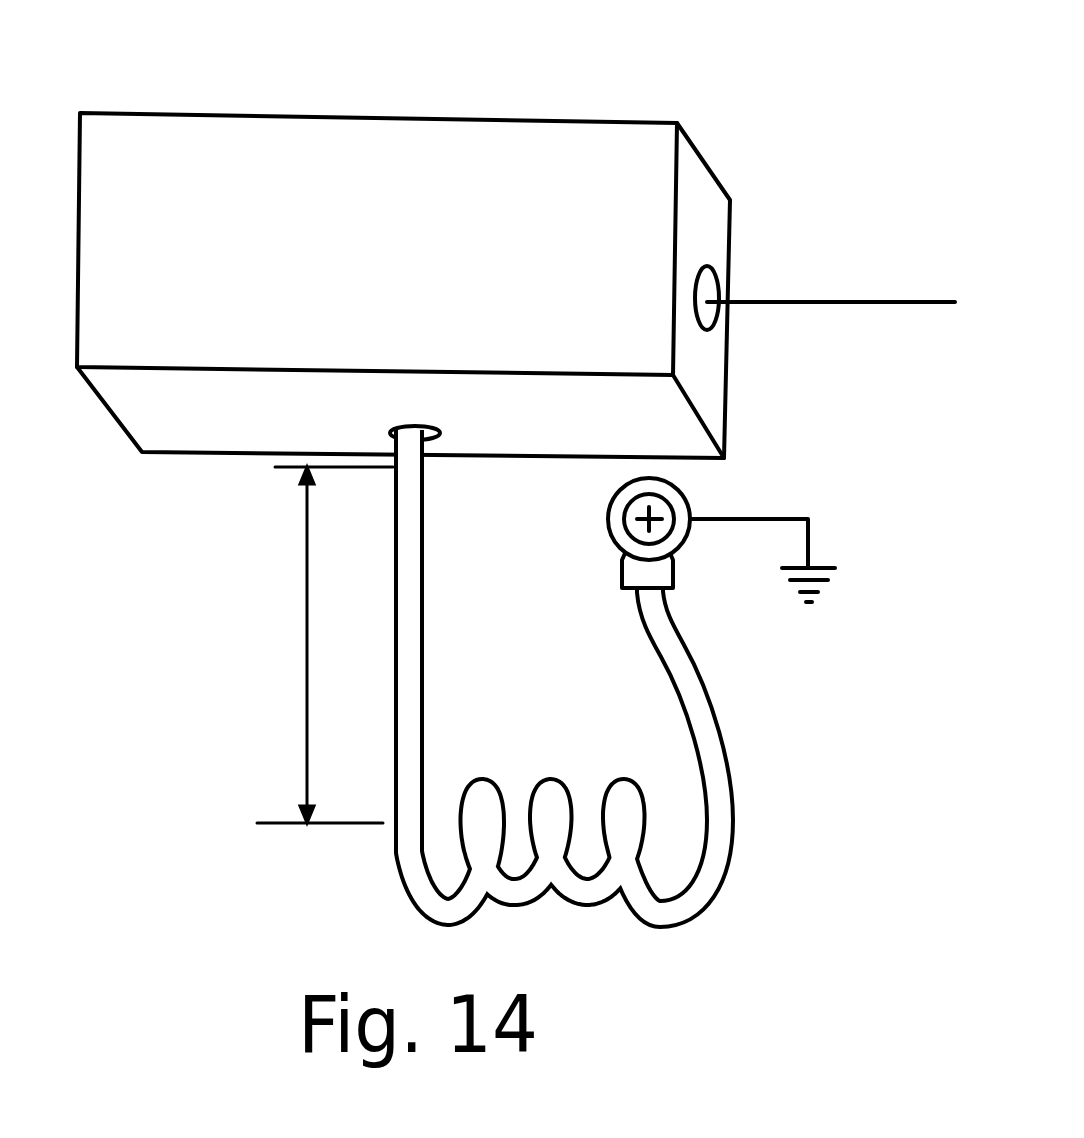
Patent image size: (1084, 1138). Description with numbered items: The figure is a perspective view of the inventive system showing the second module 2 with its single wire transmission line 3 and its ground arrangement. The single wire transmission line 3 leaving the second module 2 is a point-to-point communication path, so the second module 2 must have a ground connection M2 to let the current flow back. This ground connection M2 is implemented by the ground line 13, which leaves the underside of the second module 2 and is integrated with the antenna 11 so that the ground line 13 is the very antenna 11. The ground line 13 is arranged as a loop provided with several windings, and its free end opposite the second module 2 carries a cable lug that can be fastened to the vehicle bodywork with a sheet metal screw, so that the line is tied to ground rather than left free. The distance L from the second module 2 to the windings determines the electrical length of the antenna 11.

The second module 2 is at (553, 153).
The single wire transmission line 3 is at (827, 300).
The antenna 11 is at (410, 667).
The ground line 13 is at (733, 758).
The distance L is at (307, 567).
The ground connection M2 is at (476, 493).